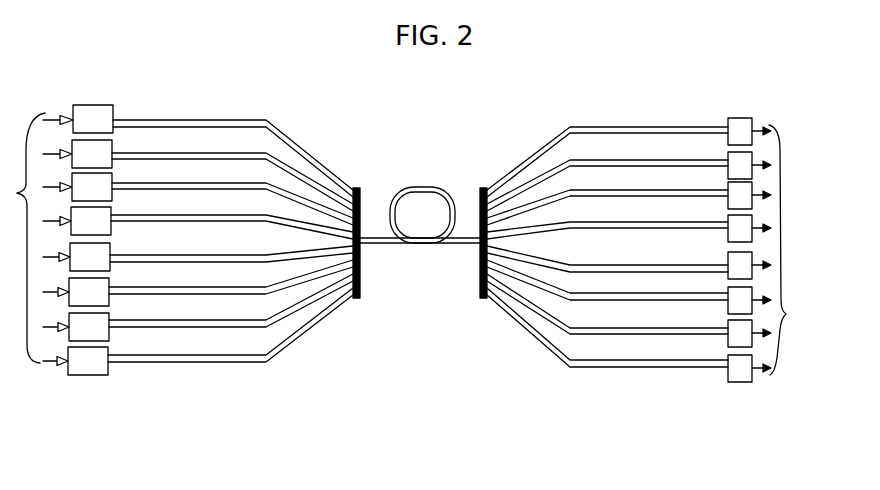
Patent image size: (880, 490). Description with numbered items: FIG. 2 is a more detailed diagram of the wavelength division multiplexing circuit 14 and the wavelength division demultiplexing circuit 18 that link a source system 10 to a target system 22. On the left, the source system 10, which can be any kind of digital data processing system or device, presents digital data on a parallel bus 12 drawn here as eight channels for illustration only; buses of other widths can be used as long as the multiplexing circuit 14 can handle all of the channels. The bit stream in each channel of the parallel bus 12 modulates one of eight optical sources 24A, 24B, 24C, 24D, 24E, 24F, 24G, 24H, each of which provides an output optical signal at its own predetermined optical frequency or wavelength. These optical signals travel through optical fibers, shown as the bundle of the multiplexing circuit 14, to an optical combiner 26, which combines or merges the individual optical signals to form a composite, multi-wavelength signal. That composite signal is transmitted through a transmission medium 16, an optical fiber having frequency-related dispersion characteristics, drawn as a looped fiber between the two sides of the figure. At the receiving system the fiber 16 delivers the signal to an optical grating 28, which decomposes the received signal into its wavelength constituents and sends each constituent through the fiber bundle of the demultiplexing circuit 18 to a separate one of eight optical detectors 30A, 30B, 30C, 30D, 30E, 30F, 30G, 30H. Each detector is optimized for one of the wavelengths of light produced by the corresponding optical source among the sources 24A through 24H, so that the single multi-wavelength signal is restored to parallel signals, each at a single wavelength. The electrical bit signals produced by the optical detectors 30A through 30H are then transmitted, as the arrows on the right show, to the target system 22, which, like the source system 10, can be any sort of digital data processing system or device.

The source system 10 is at (17, 192).
The parallel bus 12 is at (58, 378).
The wavelength division multiplexing circuit 14 is at (307, 148).
The transmission medium 16 is at (458, 190).
The wavelength division demultiplexing circuit 18 is at (520, 139).
The target system 22 is at (787, 315).
The optical source 24A is at (113, 108).
The optical source 24B is at (112, 146).
The optical source 24C is at (112, 179).
The optical source 24D is at (111, 212).
The optical source 24E is at (110, 248).
The optical source 24F is at (109, 283).
The optical source 24G is at (109, 318).
The optical source 24H is at (108, 352).
The optical combiner 26 is at (357, 298).
The optical grating 28 is at (484, 298).
The optical detector 30A is at (732, 122).
The optical detector 30B is at (732, 156).
The optical detector 30C is at (732, 186).
The optical detector 30D is at (732, 219).
The optical detector 30E is at (732, 256).
The optical detector 30F is at (732, 291).
The optical detector 30G is at (732, 324).
The optical detector 30H is at (732, 359).